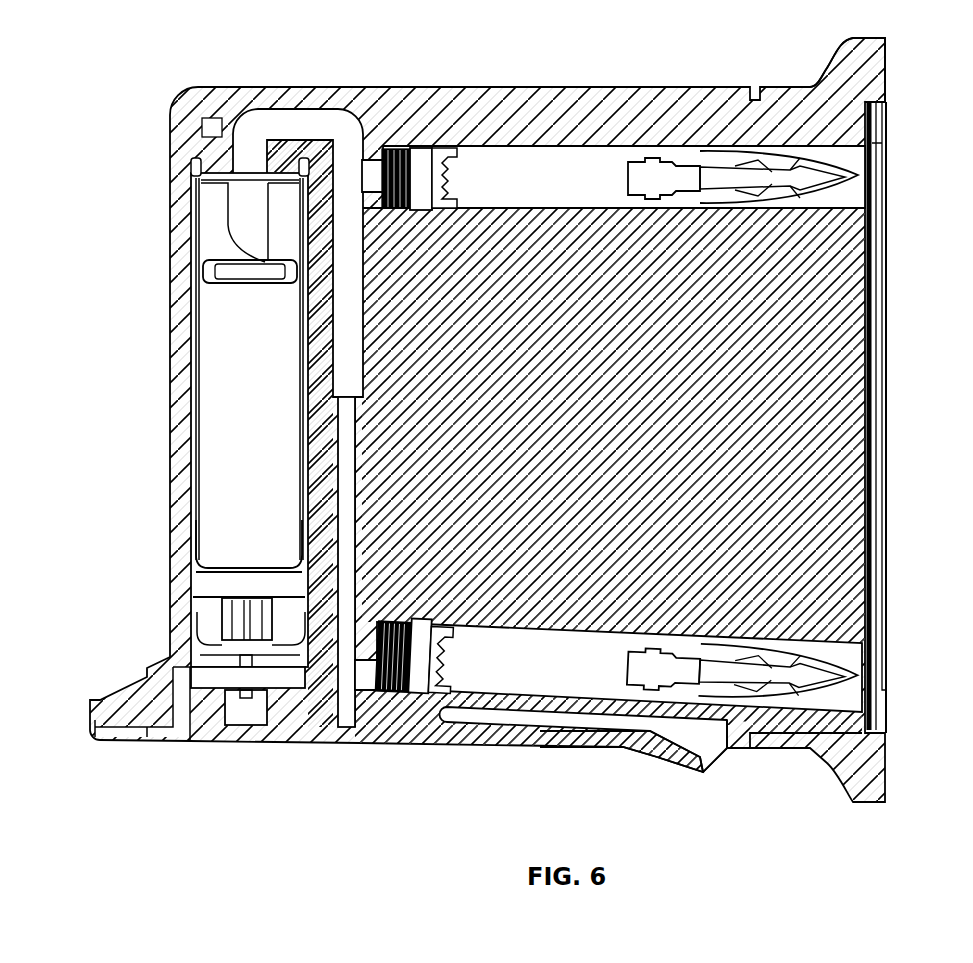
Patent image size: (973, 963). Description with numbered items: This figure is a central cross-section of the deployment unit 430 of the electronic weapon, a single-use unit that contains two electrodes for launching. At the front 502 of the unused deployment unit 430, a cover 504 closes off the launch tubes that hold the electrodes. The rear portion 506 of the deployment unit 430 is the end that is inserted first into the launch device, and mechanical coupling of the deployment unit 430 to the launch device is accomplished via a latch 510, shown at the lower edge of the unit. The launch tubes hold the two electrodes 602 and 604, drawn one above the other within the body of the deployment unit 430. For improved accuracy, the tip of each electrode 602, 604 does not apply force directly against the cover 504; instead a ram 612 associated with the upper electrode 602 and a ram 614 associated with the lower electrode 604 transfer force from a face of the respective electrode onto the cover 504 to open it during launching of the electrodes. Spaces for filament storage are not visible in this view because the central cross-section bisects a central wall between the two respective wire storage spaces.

The deployment unit 430 is at (154, 55).
The front 502 is at (887, 77).
The cover 504 is at (883, 573).
The rear portion 506 is at (167, 393).
The latch 510 is at (692, 773).
The electrode 602 is at (547, 147).
The electrode 604 is at (497, 687).
The ram 612 is at (750, 150).
The ram 614 is at (733, 700).